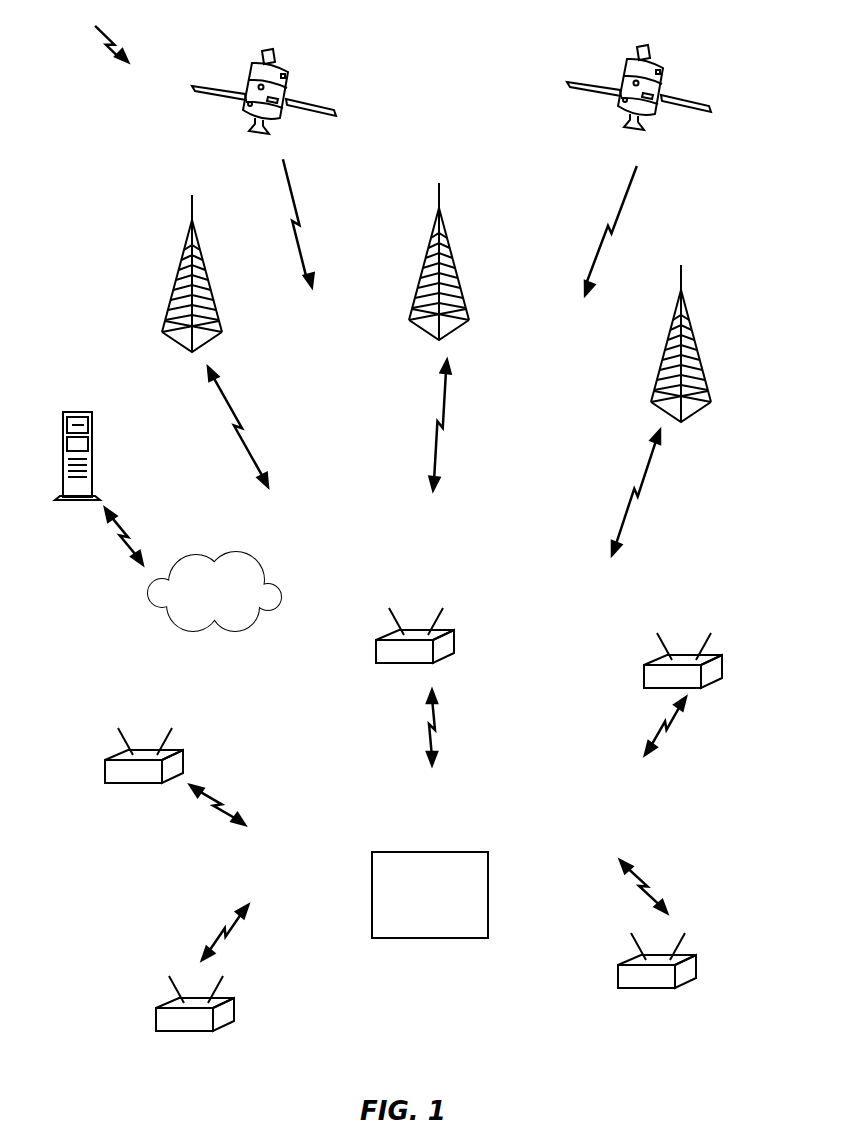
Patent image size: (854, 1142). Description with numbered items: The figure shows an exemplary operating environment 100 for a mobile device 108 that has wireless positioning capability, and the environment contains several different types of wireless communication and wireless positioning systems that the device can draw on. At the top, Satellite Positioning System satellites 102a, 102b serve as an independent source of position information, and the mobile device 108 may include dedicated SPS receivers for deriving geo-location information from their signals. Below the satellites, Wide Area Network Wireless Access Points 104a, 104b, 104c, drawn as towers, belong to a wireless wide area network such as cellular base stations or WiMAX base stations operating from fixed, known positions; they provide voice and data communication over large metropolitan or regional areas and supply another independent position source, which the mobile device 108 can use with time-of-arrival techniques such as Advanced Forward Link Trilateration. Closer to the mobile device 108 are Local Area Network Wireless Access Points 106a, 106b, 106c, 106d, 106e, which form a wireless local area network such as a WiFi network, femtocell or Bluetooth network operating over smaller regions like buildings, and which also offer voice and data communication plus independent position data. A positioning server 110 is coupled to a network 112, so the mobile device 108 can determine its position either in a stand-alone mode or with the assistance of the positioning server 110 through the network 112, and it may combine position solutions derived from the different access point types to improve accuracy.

The operating environment 100 is at (96, 37).
The Satellite Positioning System (SPS) satellite 102a is at (281, 61).
The Satellite Positioning System (SPS) satellite 102b is at (646, 55).
The Wide Area Network Wireless Access Point (WAN-WAP) 104a is at (191, 203).
The Wide Area Network Wireless Access Point (WAN-WAP) 104b is at (440, 199).
The Wide Area Network Wireless Access Point (WAN-WAP) 104c is at (682, 280).
The Local Area Network Wireless Access Point (LAN-WAP) 106a is at (184, 752).
The Local Area Network Wireless Access Point (LAN-WAP) 106b is at (456, 641).
The Local Area Network Wireless Access Point (LAN-WAP) 106c is at (644, 673).
The Local Area Network Wireless Access Point (LAN-WAP) 106d is at (235, 1009).
The Local Area Network Wireless Access Point (LAN-WAP) 106e is at (618, 978).
The mobile device 108 is at (458, 852).
The positioning server 110 is at (78, 411).
The network 112 is at (232, 555).